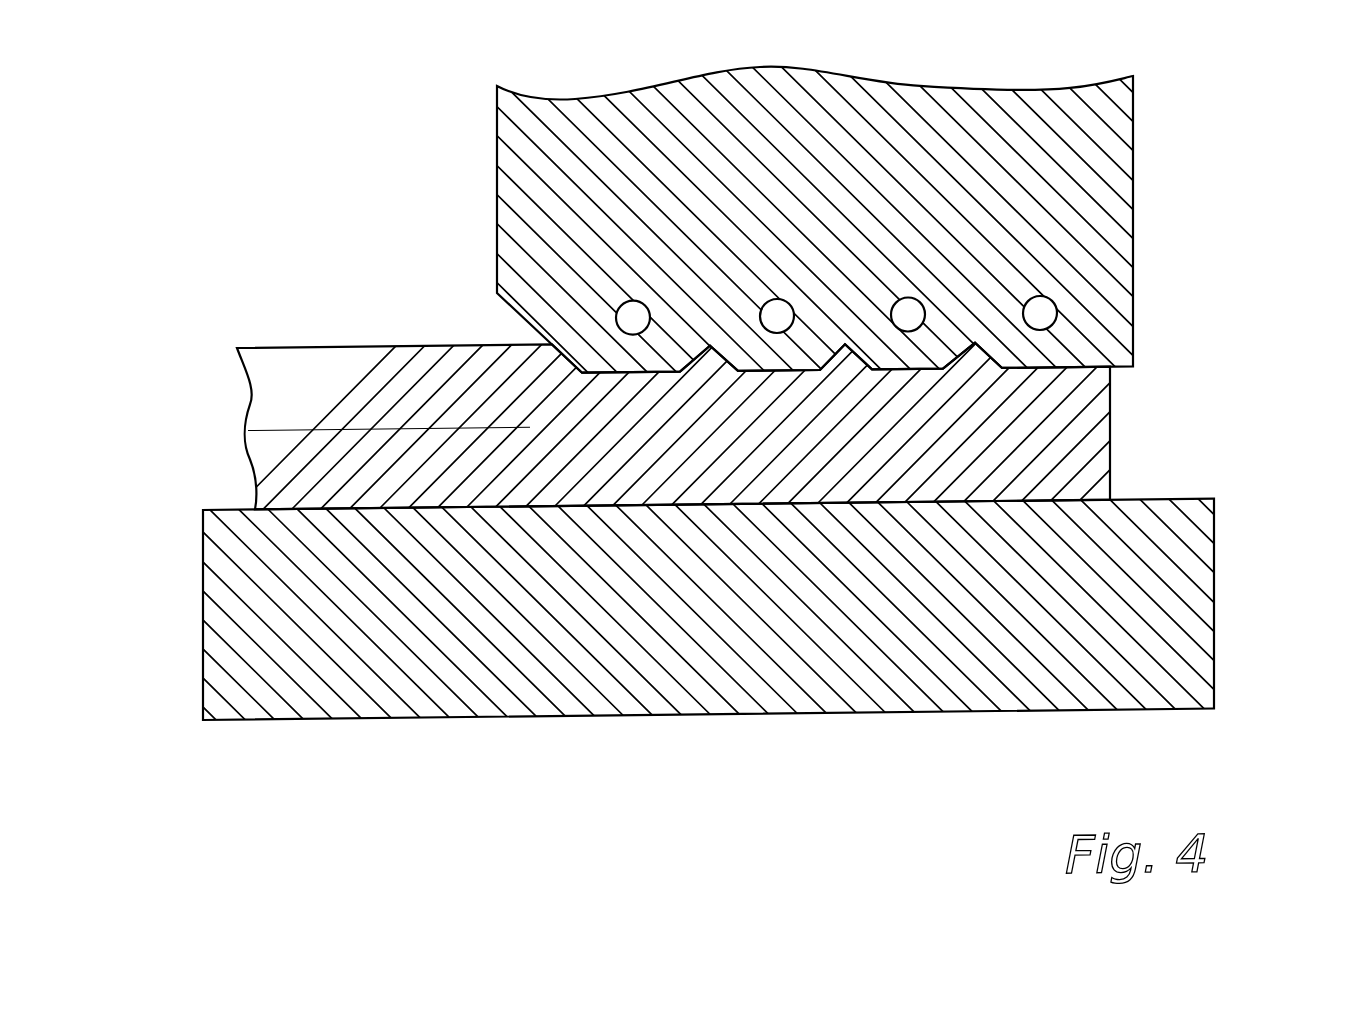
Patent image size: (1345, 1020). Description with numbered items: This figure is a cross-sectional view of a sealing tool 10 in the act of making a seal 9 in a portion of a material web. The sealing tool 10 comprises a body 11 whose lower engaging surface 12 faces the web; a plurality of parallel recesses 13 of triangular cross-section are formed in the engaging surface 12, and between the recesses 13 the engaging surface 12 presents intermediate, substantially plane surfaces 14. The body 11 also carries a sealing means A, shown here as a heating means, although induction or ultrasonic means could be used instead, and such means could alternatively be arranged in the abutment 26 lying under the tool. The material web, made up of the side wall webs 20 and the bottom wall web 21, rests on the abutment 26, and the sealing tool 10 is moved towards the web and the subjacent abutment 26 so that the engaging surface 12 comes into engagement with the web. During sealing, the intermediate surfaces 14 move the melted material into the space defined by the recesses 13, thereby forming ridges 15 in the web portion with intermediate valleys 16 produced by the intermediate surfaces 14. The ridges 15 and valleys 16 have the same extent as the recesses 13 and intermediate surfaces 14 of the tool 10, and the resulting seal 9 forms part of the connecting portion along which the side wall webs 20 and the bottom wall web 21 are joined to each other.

The sealing tool 10 is at (769, 217).
The body 11 is at (1113, 185).
The sealing means A is at (1040, 318).
The engaging surface 12 is at (640, 386).
The recesses 13 is at (978, 355).
The intermediate surfaces 14 is at (933, 380).
The ridges 15 is at (970, 361).
The valleys 16 is at (910, 381).
The side wall webs 20 is at (789, 426).
The bottom wall web 21 is at (389, 428).
The abutment 26 is at (493, 670).
The seal 9 is at (842, 460).